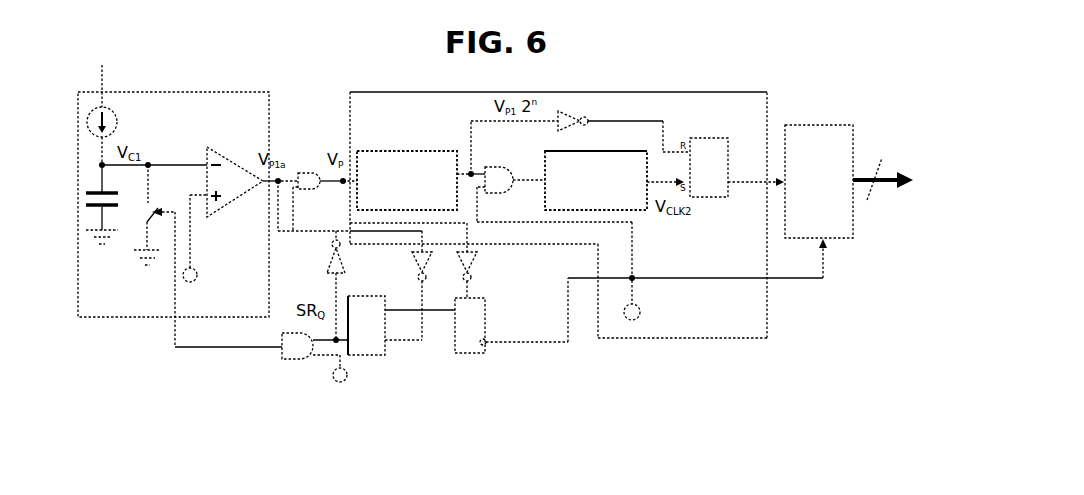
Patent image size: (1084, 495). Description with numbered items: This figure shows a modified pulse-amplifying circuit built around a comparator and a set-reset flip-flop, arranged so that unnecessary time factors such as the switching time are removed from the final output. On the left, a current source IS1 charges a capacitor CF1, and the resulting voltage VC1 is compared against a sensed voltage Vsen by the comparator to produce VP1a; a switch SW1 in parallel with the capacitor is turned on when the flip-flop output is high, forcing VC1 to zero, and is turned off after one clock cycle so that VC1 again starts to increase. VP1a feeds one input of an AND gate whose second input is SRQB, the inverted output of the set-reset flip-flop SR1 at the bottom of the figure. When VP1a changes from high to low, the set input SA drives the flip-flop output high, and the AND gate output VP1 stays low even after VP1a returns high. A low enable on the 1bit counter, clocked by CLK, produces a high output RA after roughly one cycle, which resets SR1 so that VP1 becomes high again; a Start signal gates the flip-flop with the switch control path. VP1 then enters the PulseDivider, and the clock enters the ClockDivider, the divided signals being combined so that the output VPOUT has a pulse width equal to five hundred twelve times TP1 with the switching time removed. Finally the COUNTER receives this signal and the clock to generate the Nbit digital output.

The current source IS1 is at (116, 115).
The capacitor CF1 is at (109, 204).
The SW1 switch SW1 is at (160, 215).
The sense voltage input Vsen is at (214, 240).
The SRQB output SRQB is at (314, 256).
The start AND gate Start is at (315, 359).
The set-reset flip-flop SR1 is at (372, 325).
The output RA of the one bit counter RA is at (420, 323).
The SR flip-flop input SA is at (408, 298).
The 1 bit counter 1bit is at (425, 288).
The clock input CLK is at (697, 272).
The 2^n pulse divider PulseDivider is at (407, 180).
The clock divider ClockDivider is at (596, 180).
The output voltage VP_OUT VPOUT is at (737, 180).
The counter unit COUNTER is at (819, 181).
The Nbit output Nbit is at (883, 192).